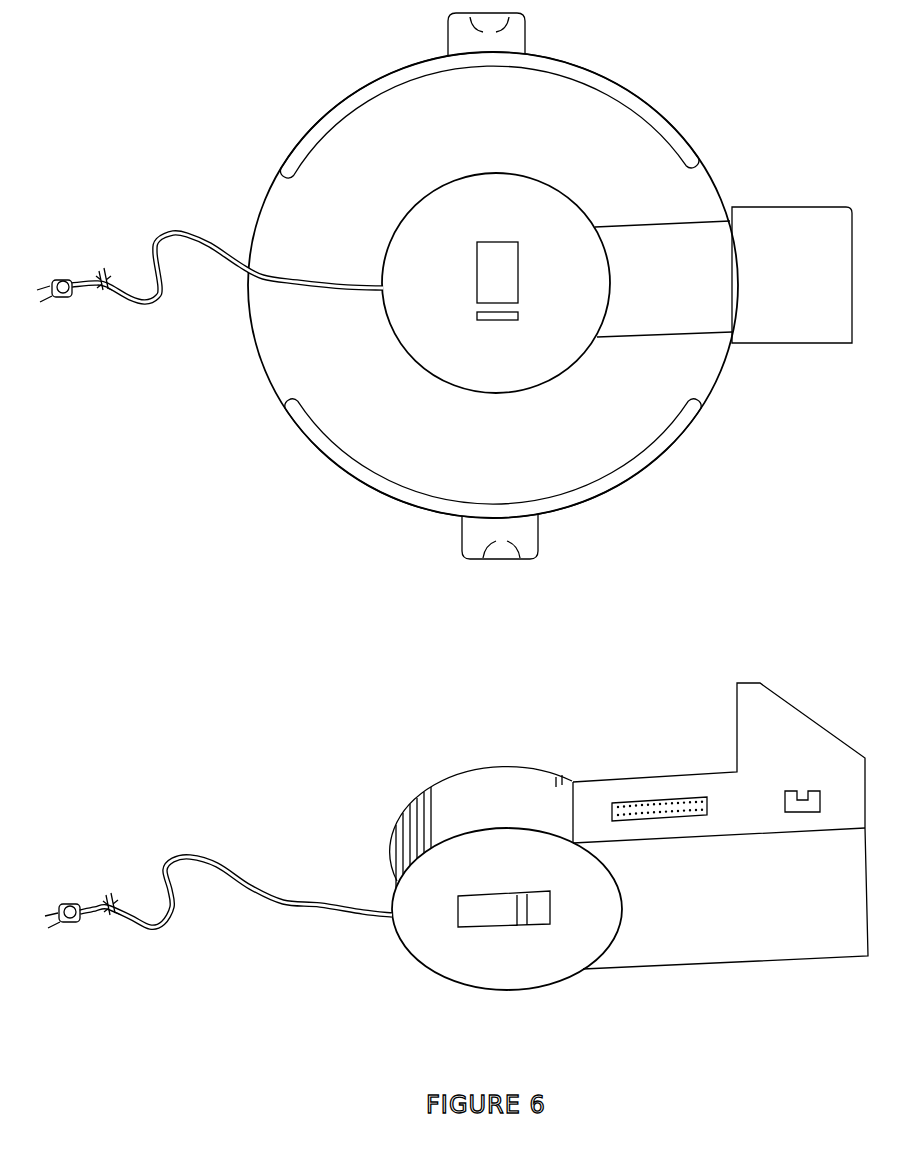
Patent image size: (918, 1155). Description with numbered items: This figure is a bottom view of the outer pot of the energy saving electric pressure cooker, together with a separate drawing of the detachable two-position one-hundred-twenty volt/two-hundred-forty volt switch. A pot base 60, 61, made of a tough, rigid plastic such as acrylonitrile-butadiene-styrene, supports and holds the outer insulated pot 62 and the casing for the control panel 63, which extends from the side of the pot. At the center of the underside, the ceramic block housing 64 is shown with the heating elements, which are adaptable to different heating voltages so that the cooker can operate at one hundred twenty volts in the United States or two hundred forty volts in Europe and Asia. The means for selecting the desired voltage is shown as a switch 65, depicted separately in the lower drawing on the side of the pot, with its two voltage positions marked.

The pot base 60 is at (372, 478).
The pot base 61 is at (341, 116).
The outer insulated pot 62 is at (695, 192).
The casing for the control panel 63 is at (812, 207).
The ceramic block housing 64 is at (488, 173).
The switch 65 is at (470, 892).